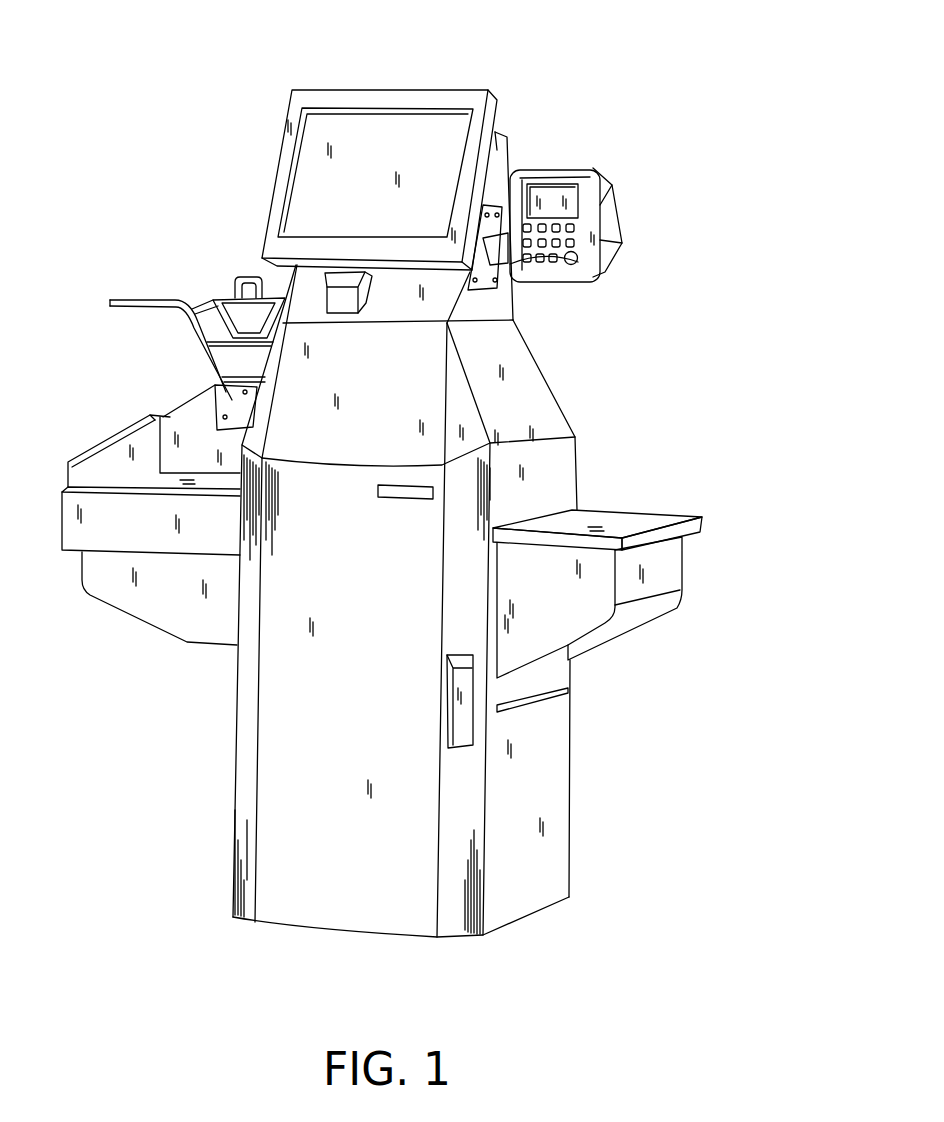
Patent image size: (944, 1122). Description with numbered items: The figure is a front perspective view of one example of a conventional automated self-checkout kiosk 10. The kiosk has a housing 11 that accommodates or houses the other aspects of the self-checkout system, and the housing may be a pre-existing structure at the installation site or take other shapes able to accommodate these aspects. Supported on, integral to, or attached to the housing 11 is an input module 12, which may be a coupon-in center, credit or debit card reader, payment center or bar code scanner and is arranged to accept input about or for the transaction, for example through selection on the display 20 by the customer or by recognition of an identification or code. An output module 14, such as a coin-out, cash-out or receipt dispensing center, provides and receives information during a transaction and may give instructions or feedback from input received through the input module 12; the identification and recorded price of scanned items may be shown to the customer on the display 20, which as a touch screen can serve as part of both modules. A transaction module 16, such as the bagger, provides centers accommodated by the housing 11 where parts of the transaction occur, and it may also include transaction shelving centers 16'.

The self-checkout kiosk 10 is at (520, 76).
The housing 11 is at (243, 760).
The input module 12 is at (348, 298).
The output module 14 is at (417, 490).
The transaction module 16 is at (359, 384).
The transaction shelving center 16' is at (621, 547).
The display 20 is at (332, 198).